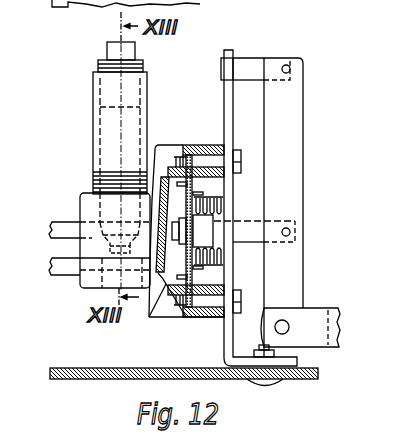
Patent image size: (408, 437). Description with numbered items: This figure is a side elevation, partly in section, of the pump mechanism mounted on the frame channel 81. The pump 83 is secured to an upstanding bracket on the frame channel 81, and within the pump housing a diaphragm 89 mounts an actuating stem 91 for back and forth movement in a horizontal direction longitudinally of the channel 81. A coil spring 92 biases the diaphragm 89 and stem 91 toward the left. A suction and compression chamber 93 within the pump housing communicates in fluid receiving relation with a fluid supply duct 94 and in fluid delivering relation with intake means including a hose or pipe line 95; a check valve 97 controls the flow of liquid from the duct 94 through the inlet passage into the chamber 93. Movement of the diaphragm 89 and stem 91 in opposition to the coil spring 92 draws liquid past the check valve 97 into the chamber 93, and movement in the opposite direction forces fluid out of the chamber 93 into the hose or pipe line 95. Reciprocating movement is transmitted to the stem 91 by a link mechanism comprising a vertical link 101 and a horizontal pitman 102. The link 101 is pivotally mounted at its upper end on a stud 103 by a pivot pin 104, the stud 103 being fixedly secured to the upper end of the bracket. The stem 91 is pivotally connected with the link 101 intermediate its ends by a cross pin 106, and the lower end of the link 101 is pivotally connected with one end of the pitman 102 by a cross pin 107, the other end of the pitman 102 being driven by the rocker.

The frame channel 81 is at (93, 379).
The pump 83 is at (198, 129).
The diaphragm 89 is at (191, 305).
The actuating stem 91 is at (248, 221).
The coil spring 92 is at (222, 259).
The suction and compression chamber 93 is at (160, 313).
The fluid supply duct 94 is at (63, 270).
The hose or pipe line 95 is at (67, 222).
The check valve 97 is at (103, 129).
The vertical link 101 is at (300, 134).
The horizontal pitman 102 is at (315, 309).
The stud 103 is at (256, 58).
The pivot pin 104 is at (289, 66).
The cross pin 106 is at (290, 231).
The cross pin 107 is at (282, 320).